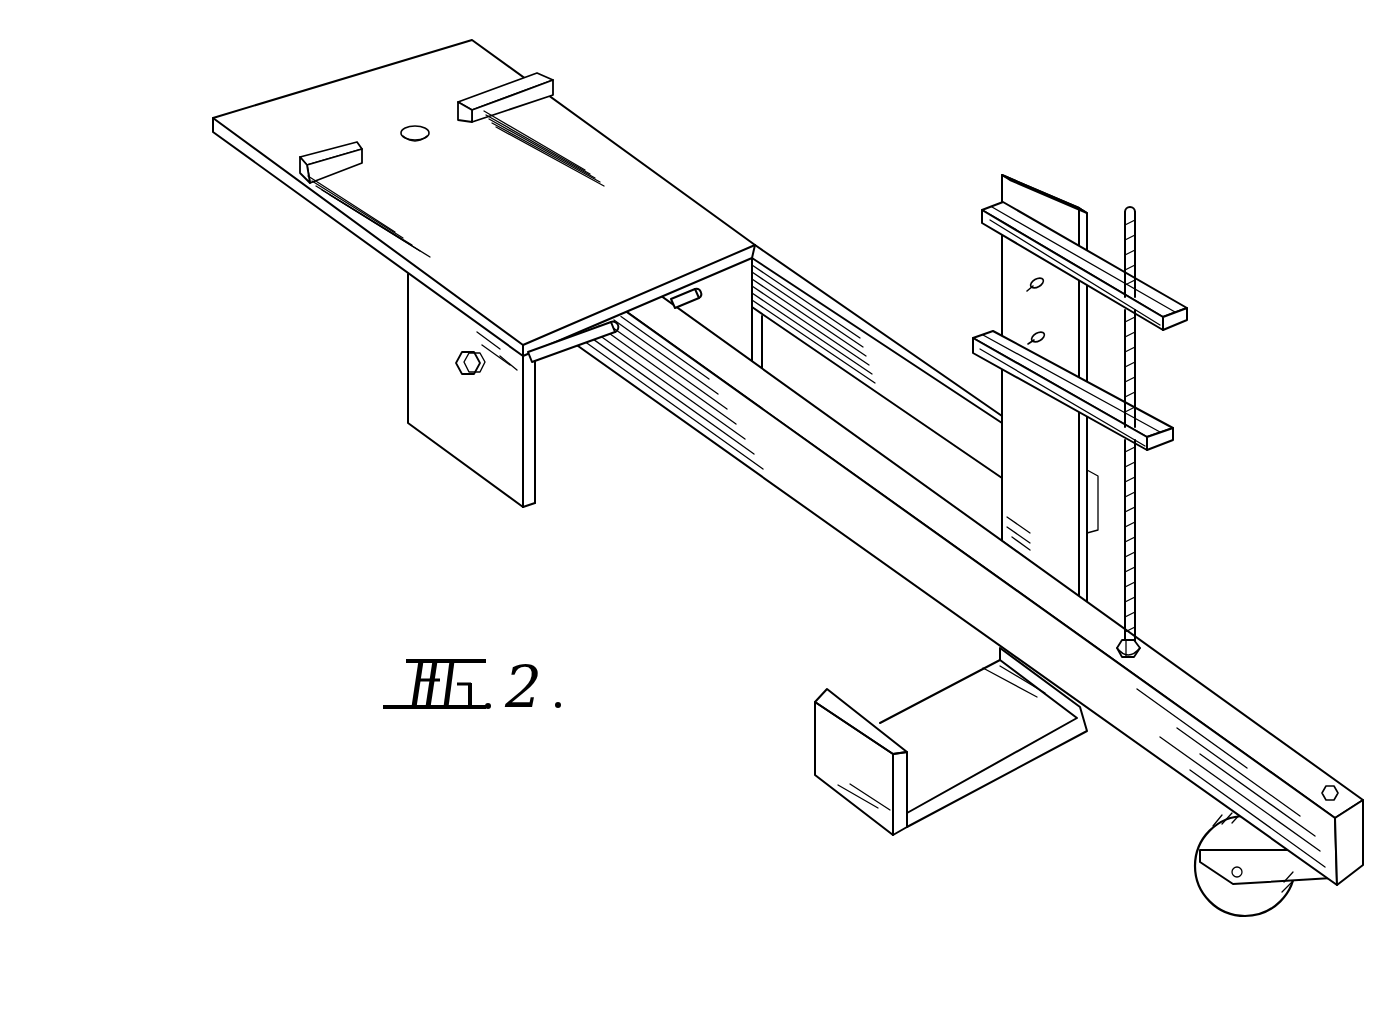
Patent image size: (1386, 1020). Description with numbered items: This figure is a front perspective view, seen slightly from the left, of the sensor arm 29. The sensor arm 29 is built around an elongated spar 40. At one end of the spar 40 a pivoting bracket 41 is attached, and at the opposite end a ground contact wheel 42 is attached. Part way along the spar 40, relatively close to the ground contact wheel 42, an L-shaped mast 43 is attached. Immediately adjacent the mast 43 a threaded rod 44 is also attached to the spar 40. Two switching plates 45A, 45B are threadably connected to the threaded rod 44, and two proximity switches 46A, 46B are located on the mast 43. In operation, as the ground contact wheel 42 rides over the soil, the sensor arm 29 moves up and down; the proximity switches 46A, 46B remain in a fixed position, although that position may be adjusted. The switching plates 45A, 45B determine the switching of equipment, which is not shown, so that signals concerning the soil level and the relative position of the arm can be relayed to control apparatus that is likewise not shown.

The sensor arm 29 is at (768, 170).
The elongated spar 40 is at (783, 453).
The pivoting bracket 41 is at (525, 244).
The ground contact wheel 42 is at (1210, 851).
The L-shaped mast 43 is at (1046, 213).
The threaded rod 44 is at (1140, 546).
The switching plate 45A is at (1190, 306).
The switching plate 45B is at (1162, 423).
The proximity switch 46A is at (1017, 277).
The proximity switch 46B is at (1022, 333).